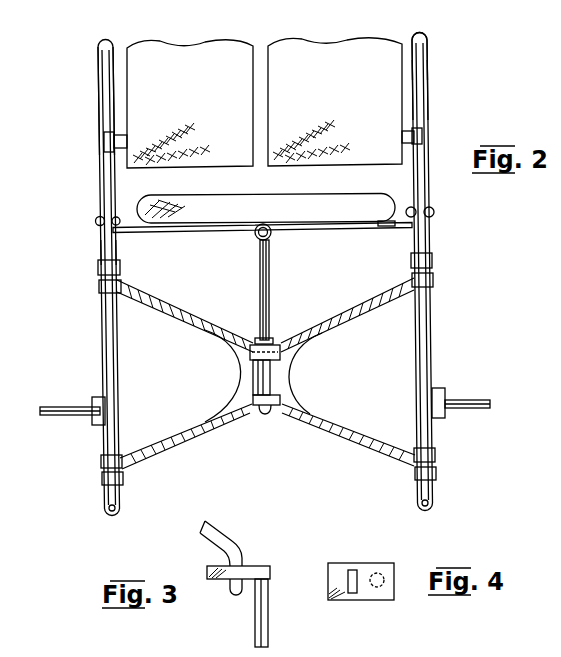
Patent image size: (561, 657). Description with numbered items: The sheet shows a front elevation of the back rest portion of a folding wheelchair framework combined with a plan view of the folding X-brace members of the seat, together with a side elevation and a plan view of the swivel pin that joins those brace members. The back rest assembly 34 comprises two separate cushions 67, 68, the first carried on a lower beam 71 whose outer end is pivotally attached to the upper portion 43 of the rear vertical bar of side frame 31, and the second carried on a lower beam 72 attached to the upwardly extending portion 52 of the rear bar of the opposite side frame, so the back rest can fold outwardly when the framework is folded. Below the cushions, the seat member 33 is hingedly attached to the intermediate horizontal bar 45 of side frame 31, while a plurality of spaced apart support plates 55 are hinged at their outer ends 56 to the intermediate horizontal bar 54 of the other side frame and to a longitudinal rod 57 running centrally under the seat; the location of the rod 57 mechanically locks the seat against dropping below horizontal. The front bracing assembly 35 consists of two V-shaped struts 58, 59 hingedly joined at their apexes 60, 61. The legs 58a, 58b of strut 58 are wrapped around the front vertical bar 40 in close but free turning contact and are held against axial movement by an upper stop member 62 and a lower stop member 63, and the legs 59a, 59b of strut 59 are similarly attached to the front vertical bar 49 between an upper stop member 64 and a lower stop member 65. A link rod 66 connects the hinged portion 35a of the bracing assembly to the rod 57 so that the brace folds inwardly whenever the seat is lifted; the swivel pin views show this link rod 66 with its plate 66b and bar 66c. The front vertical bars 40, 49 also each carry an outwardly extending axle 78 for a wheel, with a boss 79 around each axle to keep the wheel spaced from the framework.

In FIG. 2, the side frame 31 is at (101, 256).
In FIG. 2, the seat member 33 is at (232, 205).
In FIG. 2, the back rest assembly 34 is at (383, 55).
In FIG. 2, the front bracing assembly 35 is at (303, 407).
In FIG. 2, the hinged portion 35a is at (265, 350).
In FIG. 2, the front vertical bar 40 is at (104, 342).
In FIG. 2, the upper portion of rear vertical bar 43 is at (100, 110).
In FIG. 2, the intermediate horizontal bar 45 is at (99, 221).
In FIG. 2, the front vertical bar 49 is at (430, 328).
In FIG. 2, the upwardly extending portion of rear bar 52 is at (421, 80).
In FIG. 2, the intermediate horizontal bar 54 is at (431, 209).
In FIG. 2, the support plates 55 is at (323, 228).
In FIG. 2, the outer ends 56 is at (432, 216).
In FIG. 2, the longitudinal rod 57 is at (257, 242).
In FIG. 2, the V-shaped strut 58 is at (238, 390).
In FIG. 2, the leg of strut 58a is at (170, 315).
In FIG. 2, the leg of strut 58b is at (161, 440).
In FIG. 2, the V-shaped strut 59 is at (298, 388).
In FIG. 2, the leg of strut 59a is at (317, 330).
In FIG. 2, the leg of strut 59b is at (337, 420).
In FIG. 2, the apex 60 is at (259, 409).
In FIG. 2, the apex 61 is at (281, 403).
In FIG. 2, the upper stop member 62 is at (102, 267).
In FIG. 2, the lower stop member 63 is at (105, 480).
In FIG. 2, the upper stop member 64 is at (432, 262).
In FIG. 2, the lower stop member 65 is at (430, 472).
In FIG. 2, the link rod 66 is at (270, 277).
In FIG. 3, the link rod 66 is at (219, 532).
In FIG. 3, the strut plate 66b is at (217, 580).
In FIG. 4, the strut plate 66b is at (363, 572).
In FIG. 3, the strut bar 66c is at (265, 619).
In FIG. 2, the cushion 67 is at (183, 70).
In FIG. 2, the cushion 68 is at (325, 73).
In FIG. 2, the lower beam 71 is at (104, 145).
In FIG. 2, the lower beam 72 is at (422, 137).
In FIG. 2, the axles 78 is at (46, 406).
In FIG. 2, the bosses 79 is at (93, 400).